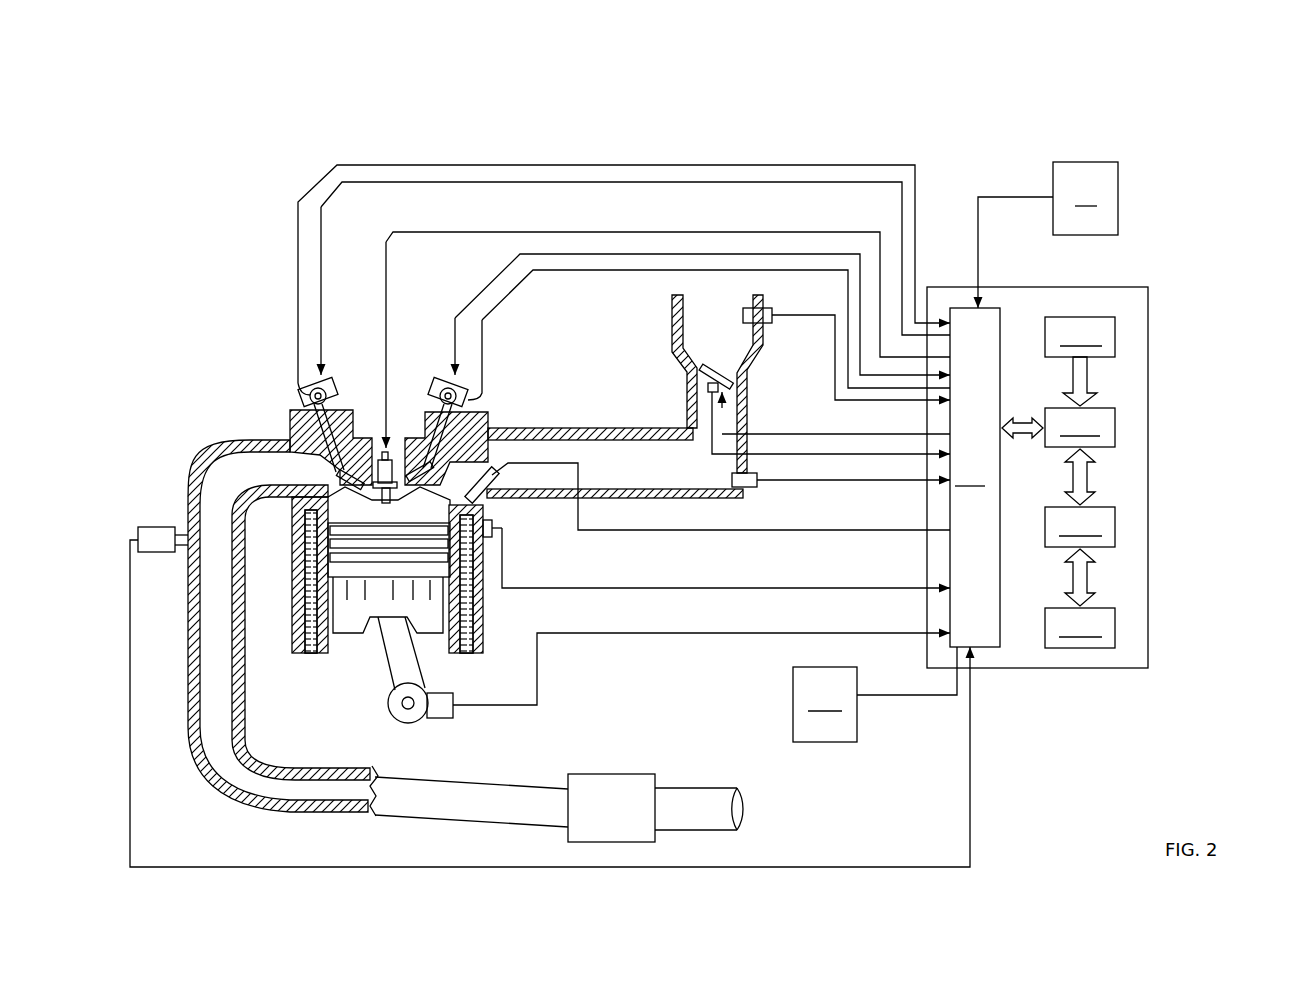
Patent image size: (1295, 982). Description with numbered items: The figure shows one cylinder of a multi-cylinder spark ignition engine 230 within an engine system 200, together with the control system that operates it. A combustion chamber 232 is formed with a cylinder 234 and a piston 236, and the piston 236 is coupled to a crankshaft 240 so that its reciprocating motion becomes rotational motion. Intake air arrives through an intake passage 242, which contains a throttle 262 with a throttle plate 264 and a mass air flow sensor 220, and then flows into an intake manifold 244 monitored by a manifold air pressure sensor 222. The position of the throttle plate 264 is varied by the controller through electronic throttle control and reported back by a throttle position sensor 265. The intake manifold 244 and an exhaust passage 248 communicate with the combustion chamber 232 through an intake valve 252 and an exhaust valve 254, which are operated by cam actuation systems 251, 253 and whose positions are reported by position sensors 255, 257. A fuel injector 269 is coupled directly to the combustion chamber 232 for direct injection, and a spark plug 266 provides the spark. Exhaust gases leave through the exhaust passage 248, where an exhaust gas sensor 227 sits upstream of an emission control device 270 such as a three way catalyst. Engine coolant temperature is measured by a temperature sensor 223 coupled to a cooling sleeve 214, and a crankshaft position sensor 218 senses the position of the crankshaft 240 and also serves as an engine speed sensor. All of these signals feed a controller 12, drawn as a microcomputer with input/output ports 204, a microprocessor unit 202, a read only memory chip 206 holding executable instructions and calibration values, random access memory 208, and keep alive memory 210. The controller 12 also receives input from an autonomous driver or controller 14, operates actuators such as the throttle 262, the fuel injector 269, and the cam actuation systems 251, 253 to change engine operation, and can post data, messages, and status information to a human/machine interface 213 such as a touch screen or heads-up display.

The engine system 200 is at (1182, 96).
The engine 230 is at (225, 362).
The controller 12 is at (1148, 290).
The autonomous driver or controller 14 is at (1085, 198).
The input/output ports 204 is at (1000, 318).
The read only memory chip 206 is at (1115, 335).
The microprocessor unit 202 is at (1115, 425).
The random access memory 208 is at (1115, 530).
The keep alive memory 210 is at (1115, 625).
The human/machine interface 213 is at (825, 704).
The intake passage 242 is at (738, 339).
The mass air flow sensor 220 is at (765, 312).
The throttle 262 is at (745, 375).
The throttle plate 264 is at (700, 375).
The throttle position sensor 265 is at (708, 390).
The intake manifold 244 is at (653, 471).
The manifold air pressure sensor 222 is at (755, 488).
The exhaust passage 248 is at (277, 480).
The exhaust gas sensor 227 is at (138, 532).
The emission control device 270 is at (559, 808).
The spark plug 266 is at (386, 450).
The cam actuation system 253 is at (335, 385).
The cam actuation system 251 is at (452, 385).
The position sensor 257 is at (310, 395).
The position sensor 255 is at (468, 402).
The exhaust valve 254 is at (320, 455).
The intake valve 252 is at (478, 475).
The fuel injector 269 is at (490, 505).
The temperature sensor 223 is at (493, 537).
The combustion chamber 232 is at (362, 510).
The cylinder 234 is at (332, 660).
The cooling sleeve 214 is at (470, 652).
The piston 236 is at (372, 620).
The crankshaft 240 is at (400, 722).
The crankshaft position sensor 218 is at (440, 718).